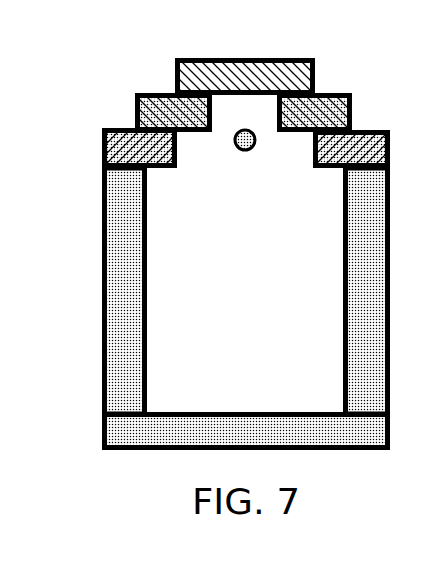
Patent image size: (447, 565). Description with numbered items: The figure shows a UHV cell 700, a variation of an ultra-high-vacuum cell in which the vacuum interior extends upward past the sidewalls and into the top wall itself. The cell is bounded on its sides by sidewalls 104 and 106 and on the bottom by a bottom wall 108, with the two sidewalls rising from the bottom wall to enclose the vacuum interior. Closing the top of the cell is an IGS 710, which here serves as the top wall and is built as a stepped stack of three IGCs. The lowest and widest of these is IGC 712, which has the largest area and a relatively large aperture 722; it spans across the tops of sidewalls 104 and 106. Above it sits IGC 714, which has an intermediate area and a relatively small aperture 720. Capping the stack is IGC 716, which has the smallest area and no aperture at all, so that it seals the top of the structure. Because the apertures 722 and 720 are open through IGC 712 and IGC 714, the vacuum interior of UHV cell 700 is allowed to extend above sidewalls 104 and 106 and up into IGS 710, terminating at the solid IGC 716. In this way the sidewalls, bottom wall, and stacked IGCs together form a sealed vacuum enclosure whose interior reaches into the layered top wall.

The UHV cell 700 is at (246, 231).
The IGS 710 is at (115, 113).
The IGC 712 is at (205, 148).
The IGC 714 is at (284, 113).
The IGC 716 is at (292, 77).
The aperture 720 is at (223, 133).
The aperture 722 is at (287, 143).
The sidewall 104 is at (103, 330).
The sidewall 106 is at (390, 307).
The bottom wall 108 is at (246, 431).